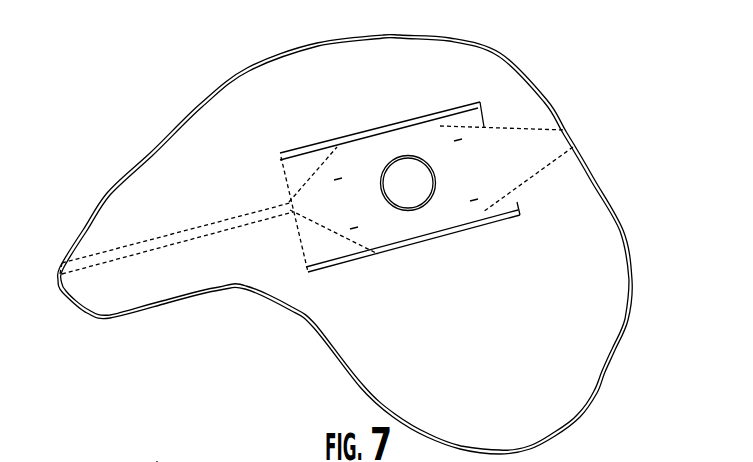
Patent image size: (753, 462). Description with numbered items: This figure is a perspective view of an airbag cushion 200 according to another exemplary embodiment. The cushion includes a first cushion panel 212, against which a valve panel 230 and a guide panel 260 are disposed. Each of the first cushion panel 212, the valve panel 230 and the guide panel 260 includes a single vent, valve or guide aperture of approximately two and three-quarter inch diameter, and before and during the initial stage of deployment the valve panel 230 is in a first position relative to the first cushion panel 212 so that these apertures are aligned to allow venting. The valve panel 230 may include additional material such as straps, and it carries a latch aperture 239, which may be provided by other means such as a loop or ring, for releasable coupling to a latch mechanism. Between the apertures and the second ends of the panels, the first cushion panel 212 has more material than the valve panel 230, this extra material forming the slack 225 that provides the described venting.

The earpiece body 200 is at (606, 138).
The first cushion panel 212 is at (575, 210).
The slack 225 is at (157, 461).
The valve panel 230 is at (536, 134).
The latch aperture 239 is at (81, 272).
The guide panel 260 is at (463, 120).